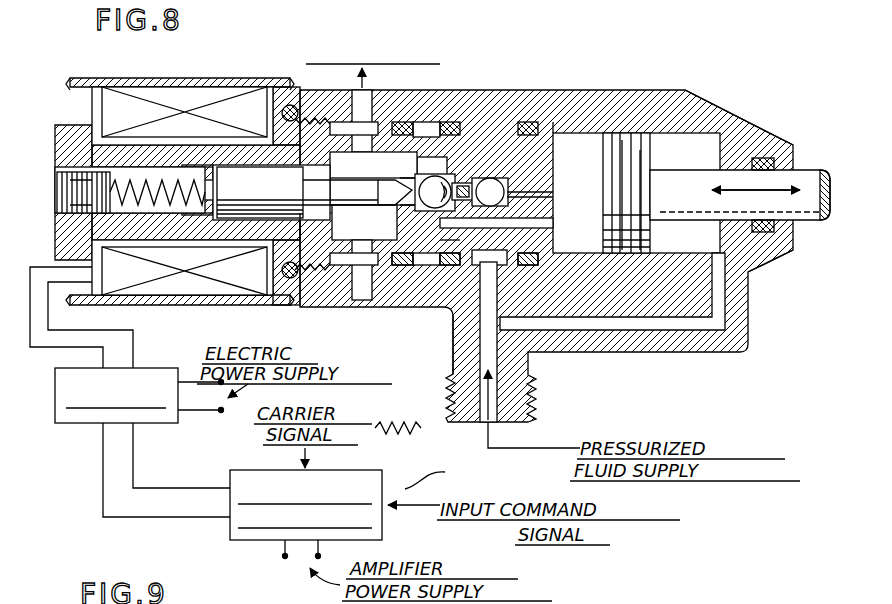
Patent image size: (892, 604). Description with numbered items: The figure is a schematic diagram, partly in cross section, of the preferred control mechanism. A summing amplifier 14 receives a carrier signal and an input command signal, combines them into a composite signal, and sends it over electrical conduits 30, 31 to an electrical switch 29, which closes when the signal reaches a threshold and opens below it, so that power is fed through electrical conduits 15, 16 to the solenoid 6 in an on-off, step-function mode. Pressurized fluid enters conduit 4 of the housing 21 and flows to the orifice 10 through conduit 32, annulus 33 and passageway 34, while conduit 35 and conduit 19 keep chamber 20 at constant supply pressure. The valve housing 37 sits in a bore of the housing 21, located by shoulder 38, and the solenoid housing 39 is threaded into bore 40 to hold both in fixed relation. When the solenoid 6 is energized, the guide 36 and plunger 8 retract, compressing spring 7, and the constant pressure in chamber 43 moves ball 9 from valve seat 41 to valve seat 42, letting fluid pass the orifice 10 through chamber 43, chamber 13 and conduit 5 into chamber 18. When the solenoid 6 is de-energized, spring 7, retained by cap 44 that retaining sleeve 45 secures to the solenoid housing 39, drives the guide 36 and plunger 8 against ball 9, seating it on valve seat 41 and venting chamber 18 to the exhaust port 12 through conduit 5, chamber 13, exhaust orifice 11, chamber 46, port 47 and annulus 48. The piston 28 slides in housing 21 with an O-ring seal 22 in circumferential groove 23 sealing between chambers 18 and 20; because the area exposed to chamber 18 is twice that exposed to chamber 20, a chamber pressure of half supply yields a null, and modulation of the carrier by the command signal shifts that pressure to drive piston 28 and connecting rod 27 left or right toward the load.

The conduit 4 is at (500, 407).
The conduit 5 is at (537, 224).
The solenoid 6 is at (174, 293).
The spring 7 is at (140, 185).
The plunger 8 is at (349, 186).
The ball 9 is at (400, 178).
The orifice 10 is at (447, 186).
The exhaust orifice 11 is at (364, 222).
The exhaust port 12 is at (360, 290).
The chamber 13 is at (426, 262).
The summing amplifier 14 is at (256, 532).
The electrical conduit 15 is at (92, 322).
The electrical conduit 16 is at (48, 356).
The chamber 18 is at (575, 145).
The conduit 19 is at (722, 323).
The chamber 20 is at (688, 152).
The housing 21 is at (777, 252).
The O-ring seal 22 is at (645, 138).
The circumferential groove 23 is at (636, 158).
The connecting rod 27 is at (725, 180).
The piston 28 is at (620, 140).
The electrical switch 29 is at (76, 428).
The electrical conduit 30 is at (172, 522).
The electrical conduit 31 is at (176, 487).
The conduit 32 is at (452, 400).
The annulus 33 is at (470, 262).
The passageway 34 is at (510, 196).
The conduit 35 is at (580, 325).
The guide 36 is at (280, 193).
The valve housing 37 is at (432, 135).
The shoulder 38 is at (578, 100).
The solenoid housing 39 is at (282, 84).
The bore 40 is at (396, 268).
The valve seat 41 is at (467, 190).
The valve seat 42 is at (418, 260).
The chamber 43 is at (440, 245).
The cap 44 is at (80, 106).
The retaining sleeve 45 is at (233, 300).
The chamber 46 is at (298, 297).
The port 47 is at (363, 142).
The annulus 48 is at (340, 128).